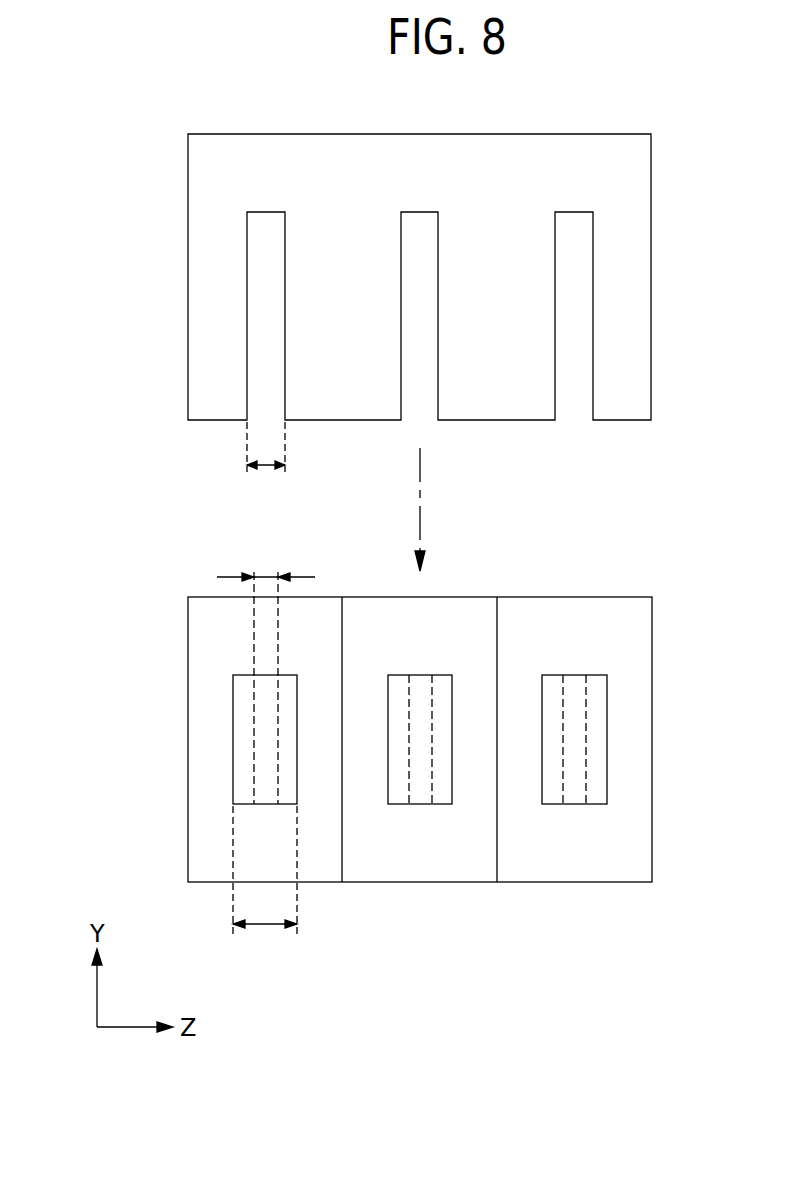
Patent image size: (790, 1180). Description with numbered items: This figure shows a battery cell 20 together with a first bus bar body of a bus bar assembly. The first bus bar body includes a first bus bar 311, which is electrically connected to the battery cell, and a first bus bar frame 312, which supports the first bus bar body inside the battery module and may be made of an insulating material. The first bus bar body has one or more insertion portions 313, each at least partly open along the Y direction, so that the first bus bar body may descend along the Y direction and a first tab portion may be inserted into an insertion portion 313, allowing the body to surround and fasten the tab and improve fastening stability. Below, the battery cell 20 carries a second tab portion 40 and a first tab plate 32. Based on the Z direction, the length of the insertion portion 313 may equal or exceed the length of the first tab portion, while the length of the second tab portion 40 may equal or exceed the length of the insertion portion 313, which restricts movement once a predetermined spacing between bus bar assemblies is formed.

The first bus bar 311 is at (215, 293).
The first bus bar frame 312 is at (256, 170).
The insertion portion 313 is at (267, 337).
The battery cell 20 is at (200, 678).
The second tab portion 40 is at (242, 720).
The first tab plate 32 is at (263, 760).